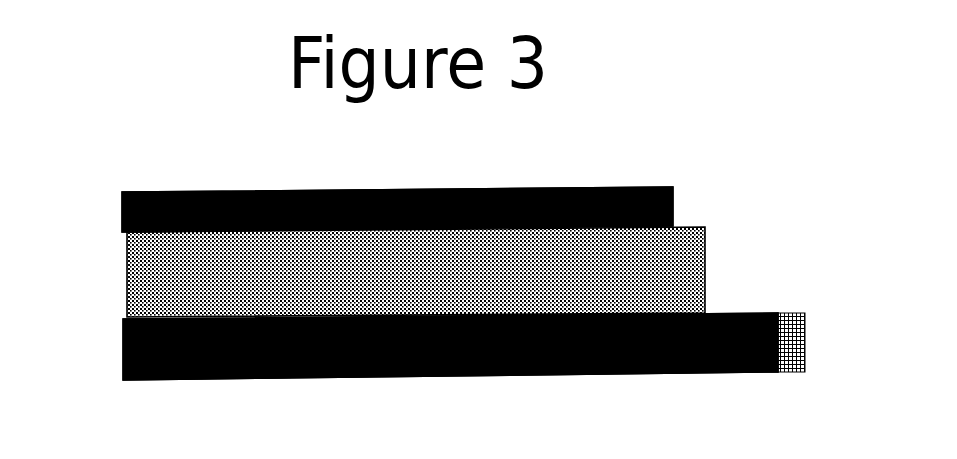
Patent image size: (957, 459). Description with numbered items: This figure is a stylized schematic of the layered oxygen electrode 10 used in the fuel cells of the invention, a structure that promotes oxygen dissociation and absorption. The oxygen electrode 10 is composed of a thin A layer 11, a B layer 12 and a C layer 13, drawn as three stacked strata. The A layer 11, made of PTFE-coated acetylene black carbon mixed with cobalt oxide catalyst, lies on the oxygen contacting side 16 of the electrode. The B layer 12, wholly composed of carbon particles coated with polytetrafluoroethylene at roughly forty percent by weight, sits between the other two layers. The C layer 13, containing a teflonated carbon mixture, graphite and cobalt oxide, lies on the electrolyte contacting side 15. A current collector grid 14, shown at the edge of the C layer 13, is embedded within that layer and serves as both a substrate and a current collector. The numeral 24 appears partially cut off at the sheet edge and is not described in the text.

The oxygen electrode 10 is at (707, 113).
The A layer 11 is at (673, 205).
The B layer 12 is at (690, 270).
The C layer 13 is at (697, 373).
The current collector grid 14 is at (805, 342).
The electrolyte contacting side 15 is at (491, 382).
The oxygen contacting side 16 is at (322, 183).
The lead 24 is at (625, 451).